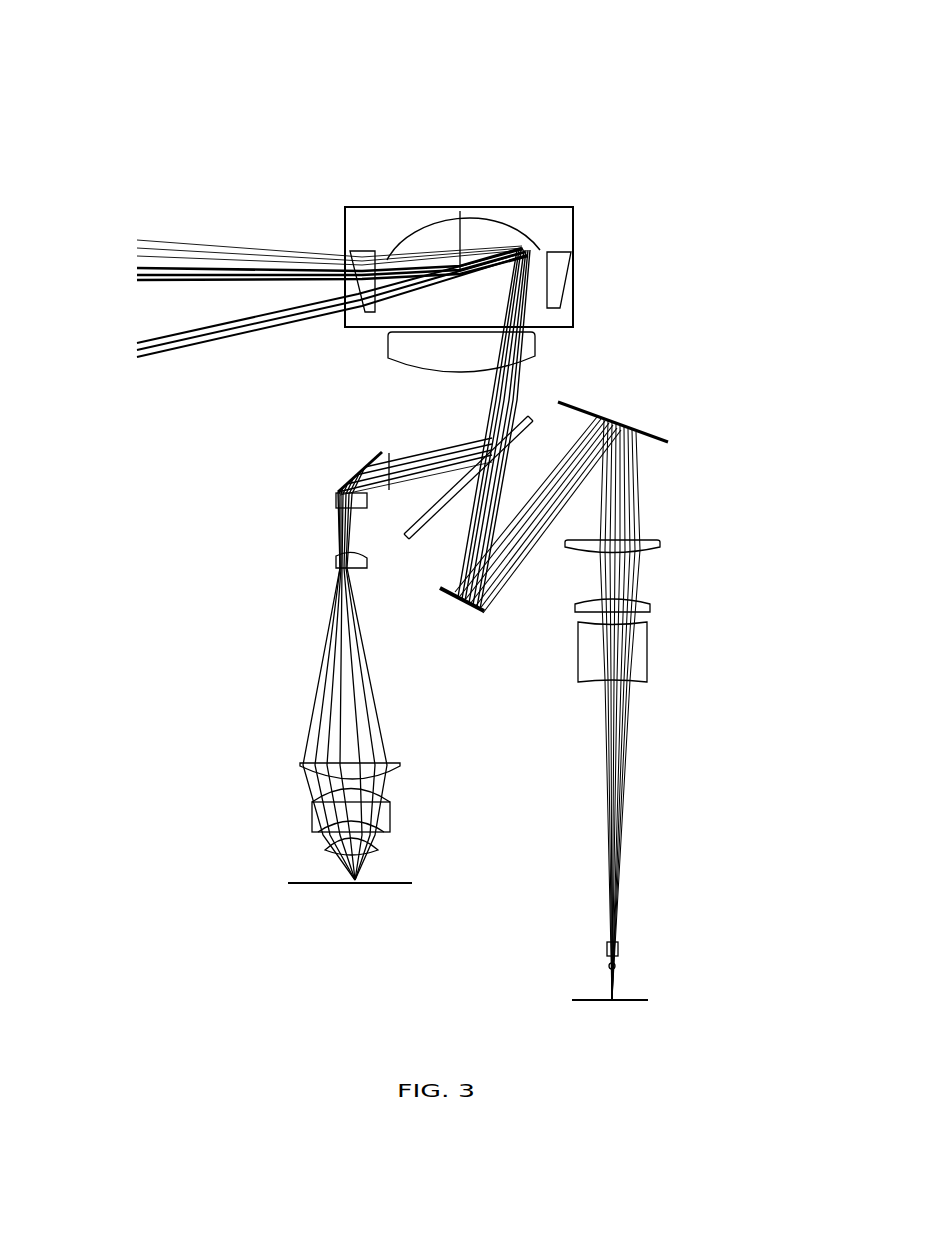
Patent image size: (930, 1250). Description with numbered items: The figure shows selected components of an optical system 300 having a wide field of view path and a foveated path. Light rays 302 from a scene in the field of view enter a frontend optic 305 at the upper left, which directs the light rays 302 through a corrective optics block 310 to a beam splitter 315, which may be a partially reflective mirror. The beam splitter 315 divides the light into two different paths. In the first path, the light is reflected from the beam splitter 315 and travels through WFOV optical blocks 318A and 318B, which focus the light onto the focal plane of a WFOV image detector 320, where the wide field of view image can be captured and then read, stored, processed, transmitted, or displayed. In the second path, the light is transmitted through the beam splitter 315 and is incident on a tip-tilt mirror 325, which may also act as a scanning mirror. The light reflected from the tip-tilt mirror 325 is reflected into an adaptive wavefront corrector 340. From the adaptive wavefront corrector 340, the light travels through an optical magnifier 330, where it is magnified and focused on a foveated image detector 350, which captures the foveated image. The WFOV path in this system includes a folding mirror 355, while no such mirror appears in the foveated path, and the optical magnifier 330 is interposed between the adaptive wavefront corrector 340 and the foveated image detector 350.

The optical system 300 is at (509, 45).
The light rays 302 is at (133, 348).
The frontend optic 305 is at (578, 253).
The corrective optics block 310 is at (398, 365).
The beam splitter 315 is at (526, 413).
The WFOV optical block 318A is at (331, 558).
The WFOV optical block 318B is at (325, 850).
The WFOV image detector 320 is at (282, 882).
The tip-tilt mirror 325 is at (463, 613).
The optical magnifier 330 is at (650, 676).
The adaptive wavefront corrector 340 is at (612, 419).
The foveated image detector 350 is at (655, 998).
The mirror 355 is at (360, 466).